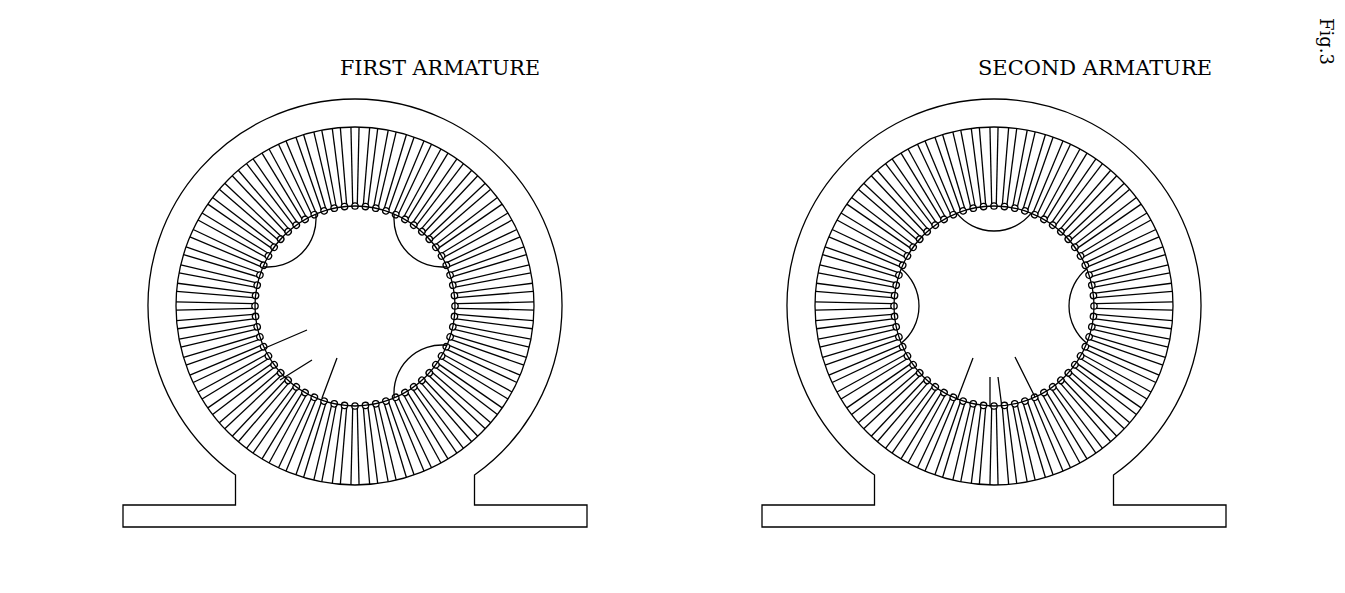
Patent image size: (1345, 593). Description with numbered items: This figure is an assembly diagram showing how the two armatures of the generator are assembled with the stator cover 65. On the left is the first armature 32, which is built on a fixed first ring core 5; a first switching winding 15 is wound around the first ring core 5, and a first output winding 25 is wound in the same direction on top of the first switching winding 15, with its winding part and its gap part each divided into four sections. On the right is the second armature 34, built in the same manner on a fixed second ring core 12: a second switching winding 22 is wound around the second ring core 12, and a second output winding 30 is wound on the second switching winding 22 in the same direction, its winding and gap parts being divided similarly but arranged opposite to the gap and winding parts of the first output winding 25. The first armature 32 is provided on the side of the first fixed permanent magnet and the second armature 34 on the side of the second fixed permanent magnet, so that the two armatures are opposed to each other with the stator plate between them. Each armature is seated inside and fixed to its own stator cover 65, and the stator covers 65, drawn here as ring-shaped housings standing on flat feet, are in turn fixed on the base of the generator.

The first ring core 5 is at (218, 408).
The second ring core 12 is at (1147, 349).
The first switching winding 15 is at (246, 202).
The second switching winding 22 is at (1152, 268).
The first output winding 25 is at (290, 162).
The second output winding 30 is at (1146, 224).
The first armature 32 is at (347, 286).
The second armature 34 is at (1021, 286).
The stator cover 65 is at (556, 305).